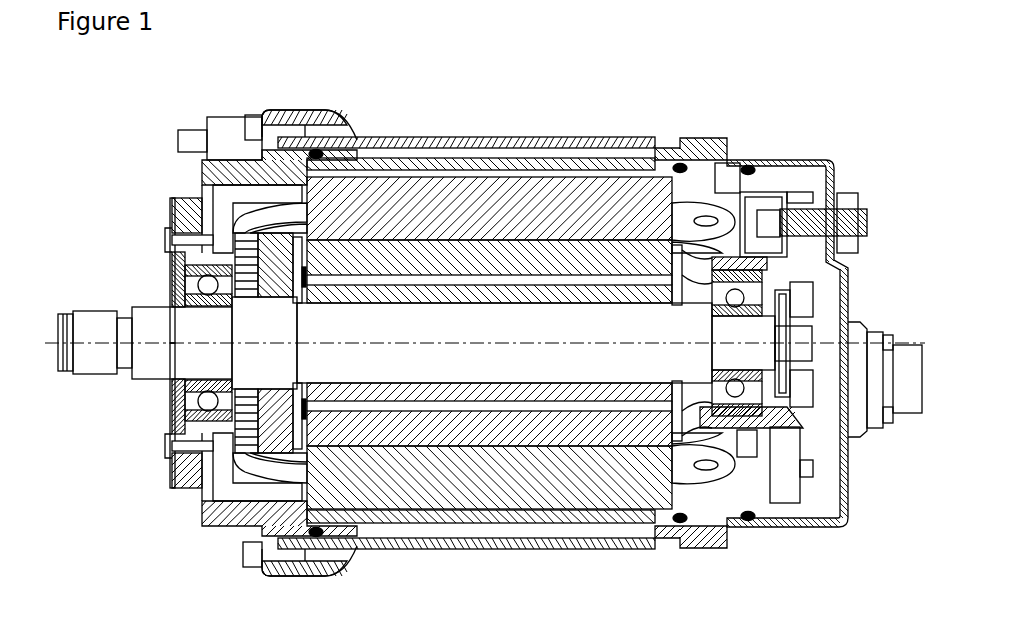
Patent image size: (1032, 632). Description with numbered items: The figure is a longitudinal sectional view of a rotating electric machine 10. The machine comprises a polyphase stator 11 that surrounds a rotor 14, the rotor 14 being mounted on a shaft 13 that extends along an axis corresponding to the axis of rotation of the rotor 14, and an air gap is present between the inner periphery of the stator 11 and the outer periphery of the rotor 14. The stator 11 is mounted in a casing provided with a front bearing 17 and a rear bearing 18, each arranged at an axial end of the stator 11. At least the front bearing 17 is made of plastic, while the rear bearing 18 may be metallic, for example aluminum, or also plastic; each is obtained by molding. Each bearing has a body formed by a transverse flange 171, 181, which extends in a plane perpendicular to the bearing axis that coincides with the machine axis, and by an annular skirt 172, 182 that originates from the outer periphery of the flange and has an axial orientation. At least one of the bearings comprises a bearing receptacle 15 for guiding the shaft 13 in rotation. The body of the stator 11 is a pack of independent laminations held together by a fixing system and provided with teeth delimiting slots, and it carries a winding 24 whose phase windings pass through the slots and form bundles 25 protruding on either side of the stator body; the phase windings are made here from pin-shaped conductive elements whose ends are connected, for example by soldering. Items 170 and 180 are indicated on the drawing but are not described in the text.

The rotating electric machine 10 is at (188, 108).
The polyphase stator 11 is at (462, 207).
The shaft 13 is at (693, 333).
The rotor 14 is at (463, 417).
The bearing receptacle 15 is at (803, 418).
The front bearing 17 is at (213, 533).
The rear bearing 18 is at (732, 143).
The winding 24 is at (685, 210).
The bundles 25 is at (723, 213).
The front flange 170 is at (180, 470).
The transverse flange 171 is at (203, 181).
The skirt 172 is at (418, 518).
The fastening flange 180 is at (672, 535).
The transverse flange 181 is at (767, 490).
The skirt 182 is at (553, 137).